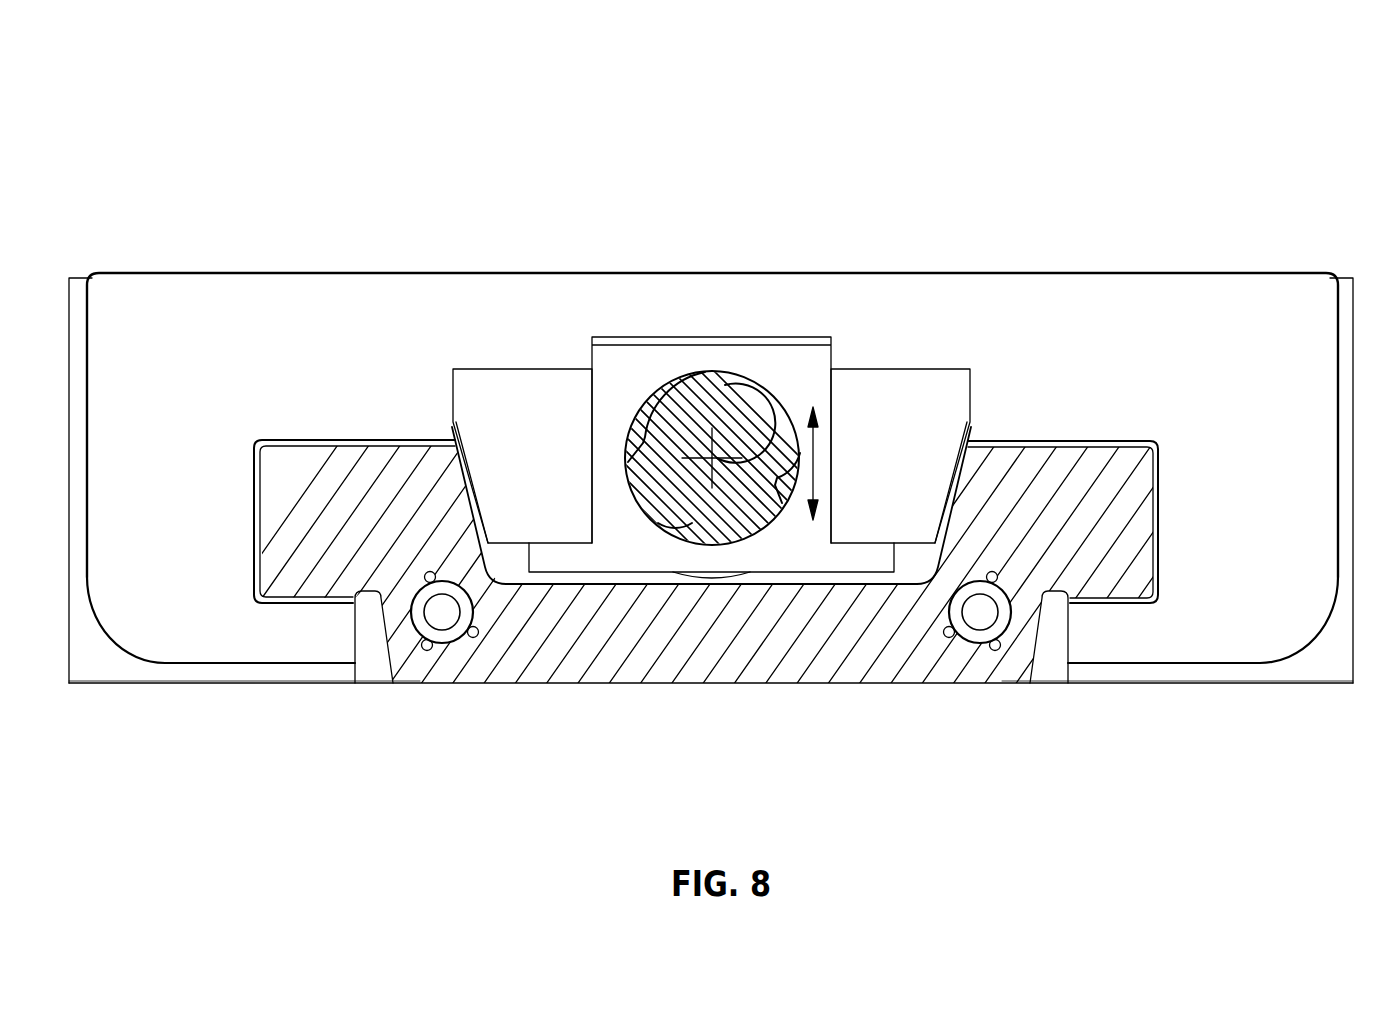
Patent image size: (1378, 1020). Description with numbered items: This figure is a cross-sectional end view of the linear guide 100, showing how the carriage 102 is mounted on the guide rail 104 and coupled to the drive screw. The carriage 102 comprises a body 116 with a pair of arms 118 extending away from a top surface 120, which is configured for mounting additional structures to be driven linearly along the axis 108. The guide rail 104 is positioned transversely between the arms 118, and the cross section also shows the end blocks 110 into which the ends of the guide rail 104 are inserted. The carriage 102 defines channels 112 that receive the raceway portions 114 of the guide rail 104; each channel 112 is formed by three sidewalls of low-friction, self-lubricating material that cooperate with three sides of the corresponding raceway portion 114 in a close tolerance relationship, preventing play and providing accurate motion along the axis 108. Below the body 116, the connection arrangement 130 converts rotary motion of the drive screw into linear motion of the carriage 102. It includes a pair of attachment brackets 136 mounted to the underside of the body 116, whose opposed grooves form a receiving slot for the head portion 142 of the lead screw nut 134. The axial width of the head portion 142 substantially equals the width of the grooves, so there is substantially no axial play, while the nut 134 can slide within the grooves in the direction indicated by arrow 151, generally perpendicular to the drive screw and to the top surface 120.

The linear guide 100 is at (978, 133).
The carriage 102 is at (1325, 252).
The guide rail 104 is at (900, 655).
The axis 108 is at (733, 452).
The end blocks 110 is at (1322, 683).
The channels 112 is at (326, 510).
The raceway portions 114 is at (292, 462).
The body 116 is at (1110, 298).
The arms 118 is at (196, 722).
The top surface 120 is at (1210, 273).
The connection arrangement 130 is at (828, 600).
The lead screw nut 134 is at (613, 603).
The attachment brackets 136 is at (510, 390).
The head portion 142 is at (621, 548).
The arrow 151 is at (820, 443).